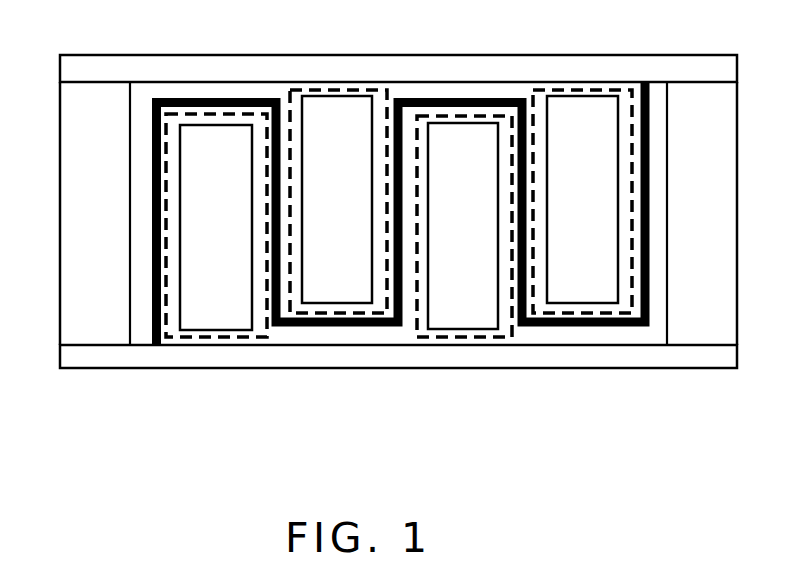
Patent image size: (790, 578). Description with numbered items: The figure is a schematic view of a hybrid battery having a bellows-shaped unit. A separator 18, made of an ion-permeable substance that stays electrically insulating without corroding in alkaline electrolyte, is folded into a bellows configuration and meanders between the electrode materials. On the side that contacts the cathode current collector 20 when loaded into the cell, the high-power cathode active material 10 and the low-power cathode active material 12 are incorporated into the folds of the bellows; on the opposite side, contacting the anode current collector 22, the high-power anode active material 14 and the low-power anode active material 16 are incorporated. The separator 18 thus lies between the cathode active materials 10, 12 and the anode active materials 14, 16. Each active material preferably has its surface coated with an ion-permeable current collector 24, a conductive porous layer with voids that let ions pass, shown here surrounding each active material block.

The high-power cathode active material 10 is at (345, 115).
The low-power cathode active material 12 is at (583, 115).
The high-power anode active material 14 is at (228, 313).
The low-power anode active material 16 is at (463, 310).
The separator 18 is at (240, 98).
The cathode current collector 20 is at (183, 55).
The anode current collector 22 is at (592, 370).
The ion-permeable current collector 24 is at (417, 298).